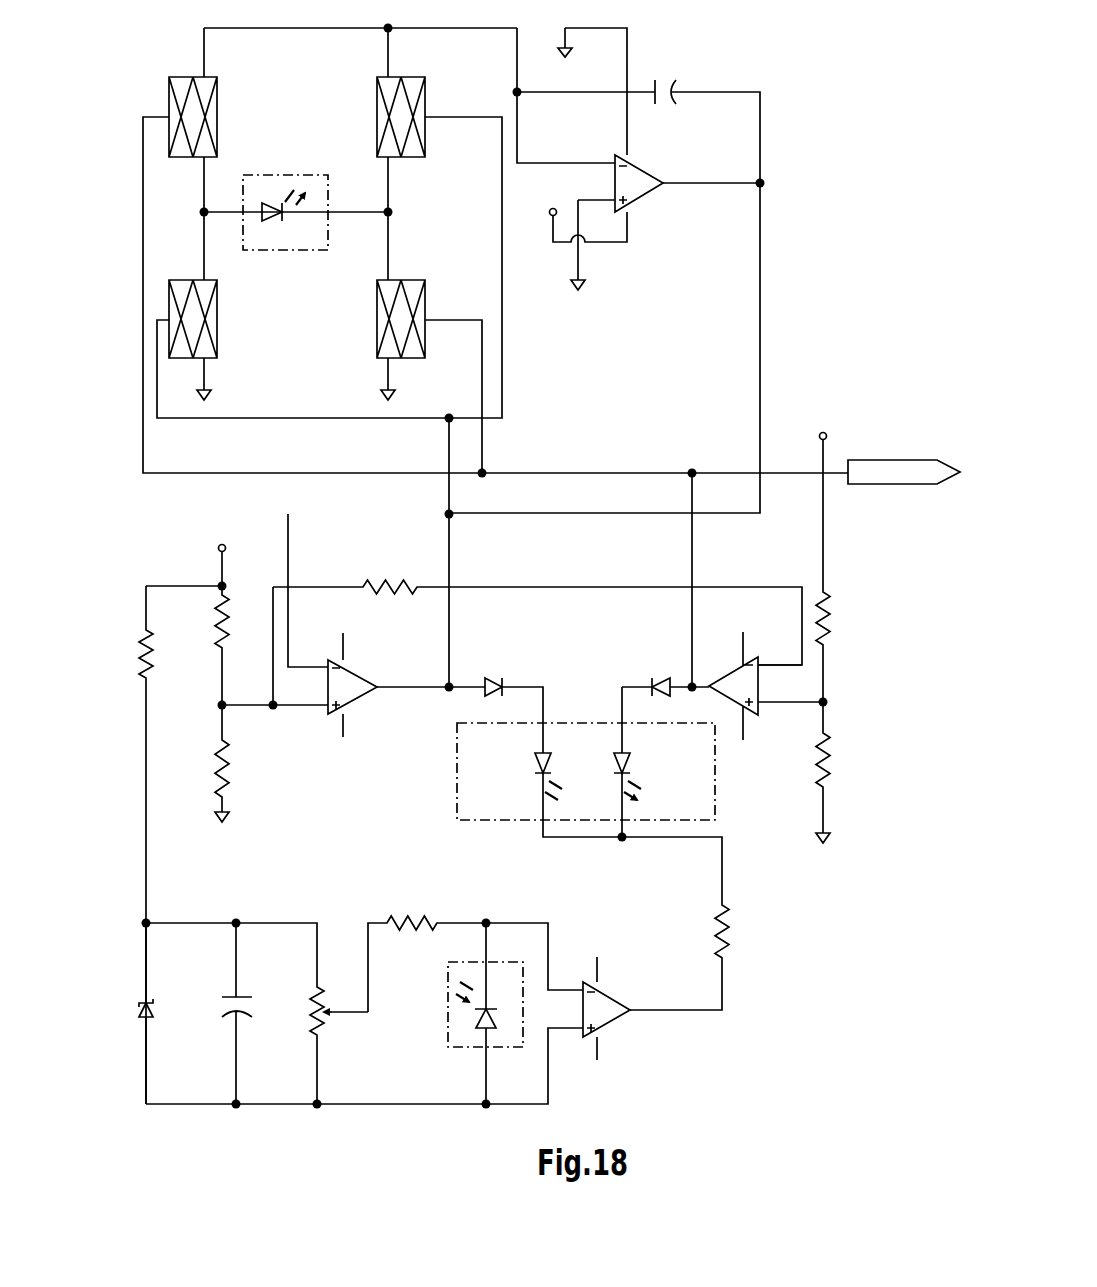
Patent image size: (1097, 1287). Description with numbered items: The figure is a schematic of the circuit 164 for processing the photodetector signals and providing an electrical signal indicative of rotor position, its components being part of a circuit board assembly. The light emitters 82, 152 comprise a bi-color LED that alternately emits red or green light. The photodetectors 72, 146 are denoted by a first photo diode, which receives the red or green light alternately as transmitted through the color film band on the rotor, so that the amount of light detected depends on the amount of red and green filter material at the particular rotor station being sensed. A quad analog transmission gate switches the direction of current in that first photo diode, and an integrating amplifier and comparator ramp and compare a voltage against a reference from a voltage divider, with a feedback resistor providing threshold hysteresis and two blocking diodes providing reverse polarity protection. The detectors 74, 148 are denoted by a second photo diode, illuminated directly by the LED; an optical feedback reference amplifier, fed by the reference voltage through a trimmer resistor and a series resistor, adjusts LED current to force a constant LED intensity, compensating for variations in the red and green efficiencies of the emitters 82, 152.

The circuit for providing an electrical signal indicative of the rotor position 164 is at (803, 305).
The photodetector 72 is at (286, 177).
The photodetector 146 is at (303, 175).
The light emitter 82 is at (546, 789).
The light emitter 152 is at (490, 822).
The detector 74 is at (456, 1023).
The detector 148 is at (448, 1015).